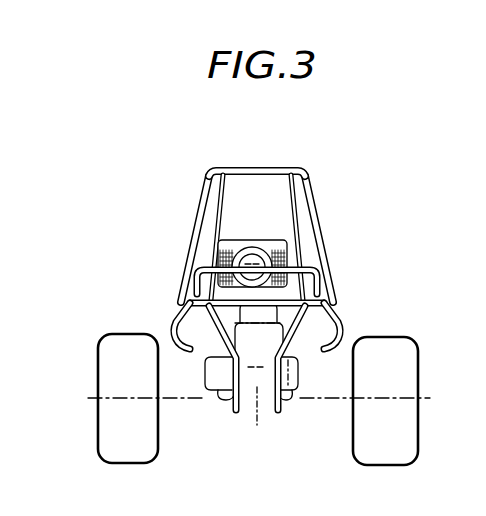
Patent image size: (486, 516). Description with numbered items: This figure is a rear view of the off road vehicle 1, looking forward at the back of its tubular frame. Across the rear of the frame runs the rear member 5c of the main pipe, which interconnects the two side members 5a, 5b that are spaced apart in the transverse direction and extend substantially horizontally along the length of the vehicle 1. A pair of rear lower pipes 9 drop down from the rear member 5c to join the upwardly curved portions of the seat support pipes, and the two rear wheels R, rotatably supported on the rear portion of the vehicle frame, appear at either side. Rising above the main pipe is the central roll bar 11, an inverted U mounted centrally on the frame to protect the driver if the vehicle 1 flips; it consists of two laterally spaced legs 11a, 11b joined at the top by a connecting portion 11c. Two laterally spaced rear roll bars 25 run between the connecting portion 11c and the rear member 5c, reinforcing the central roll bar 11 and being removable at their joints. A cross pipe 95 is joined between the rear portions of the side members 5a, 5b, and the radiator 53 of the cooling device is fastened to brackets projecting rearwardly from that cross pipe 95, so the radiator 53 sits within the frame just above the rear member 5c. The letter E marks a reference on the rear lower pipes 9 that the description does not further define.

The off road vehicle 1 is at (375, 228).
The side member 5a is at (174, 327).
The side member 5b is at (338, 326).
The rear member 5c is at (290, 300).
The rear lower pipes 9 is at (236, 388).
The central roll bar 11 is at (277, 167).
The leg 11a is at (197, 227).
The leg 11b is at (320, 220).
The connecting portion 11c is at (258, 167).
The rear roll bars 25 is at (216, 202).
The radiator 53 is at (275, 240).
The cross pipe 95 is at (193, 272).
The rear wheels R is at (98, 343).
The center line of engine E is at (255, 421).